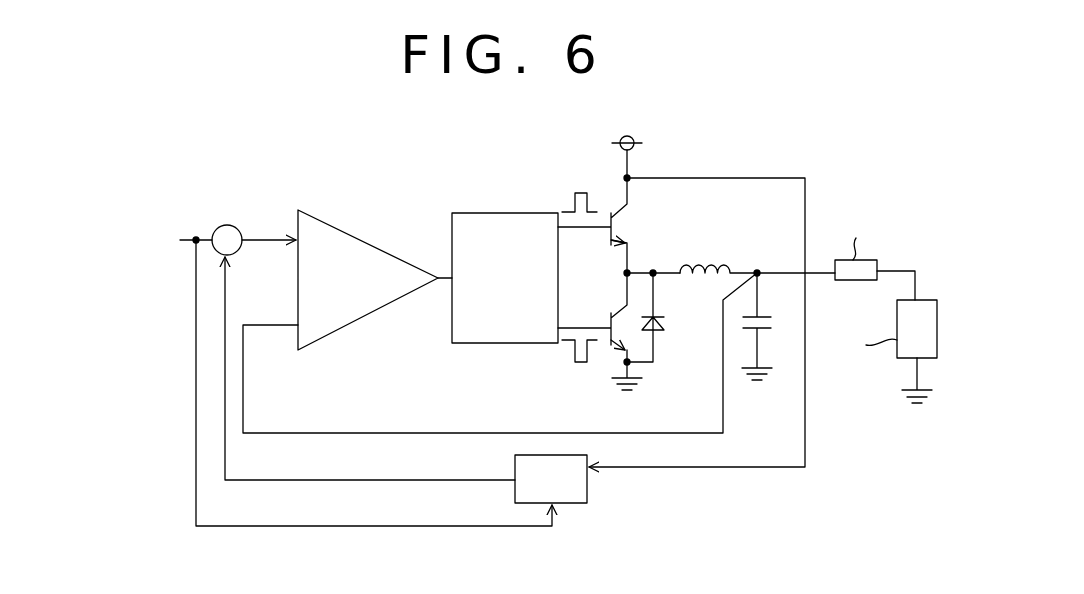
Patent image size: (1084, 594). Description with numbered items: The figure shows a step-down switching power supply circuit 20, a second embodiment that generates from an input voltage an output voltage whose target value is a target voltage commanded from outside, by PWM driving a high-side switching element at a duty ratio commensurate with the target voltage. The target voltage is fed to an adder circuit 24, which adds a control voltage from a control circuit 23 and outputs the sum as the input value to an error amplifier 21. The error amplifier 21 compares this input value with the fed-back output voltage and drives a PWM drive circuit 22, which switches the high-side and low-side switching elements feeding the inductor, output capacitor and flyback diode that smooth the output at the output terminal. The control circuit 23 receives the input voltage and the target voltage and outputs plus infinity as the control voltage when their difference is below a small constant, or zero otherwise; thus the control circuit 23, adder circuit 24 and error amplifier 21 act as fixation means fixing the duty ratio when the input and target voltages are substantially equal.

The step-down switching power supply circuit 20 is at (355, 128).
The error amplifier 21 is at (341, 230).
The PWM drive circuit 22 is at (503, 213).
The control circuit 23 is at (571, 504).
The adder circuit 24 is at (227, 224).